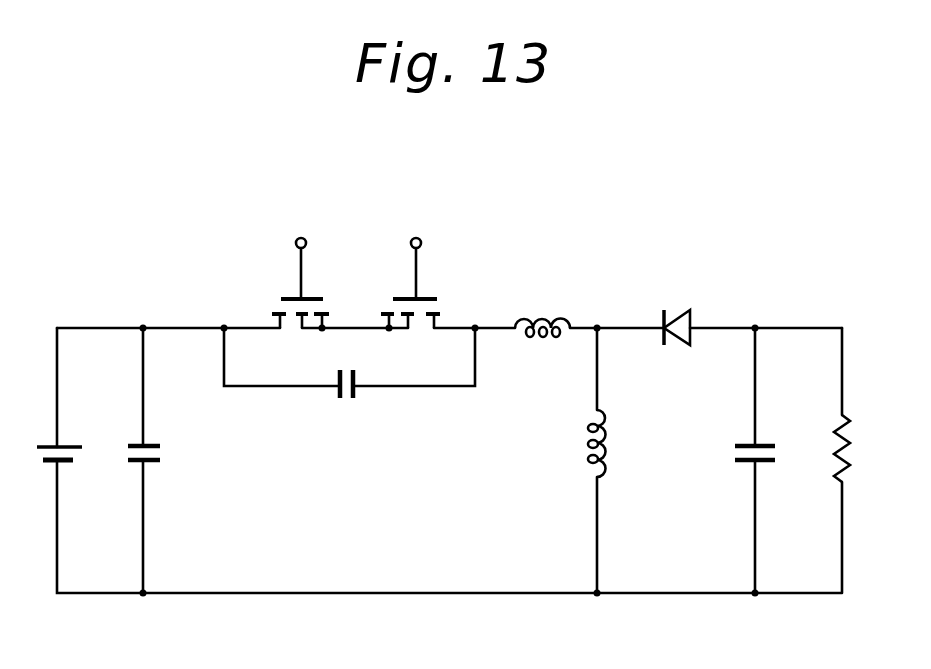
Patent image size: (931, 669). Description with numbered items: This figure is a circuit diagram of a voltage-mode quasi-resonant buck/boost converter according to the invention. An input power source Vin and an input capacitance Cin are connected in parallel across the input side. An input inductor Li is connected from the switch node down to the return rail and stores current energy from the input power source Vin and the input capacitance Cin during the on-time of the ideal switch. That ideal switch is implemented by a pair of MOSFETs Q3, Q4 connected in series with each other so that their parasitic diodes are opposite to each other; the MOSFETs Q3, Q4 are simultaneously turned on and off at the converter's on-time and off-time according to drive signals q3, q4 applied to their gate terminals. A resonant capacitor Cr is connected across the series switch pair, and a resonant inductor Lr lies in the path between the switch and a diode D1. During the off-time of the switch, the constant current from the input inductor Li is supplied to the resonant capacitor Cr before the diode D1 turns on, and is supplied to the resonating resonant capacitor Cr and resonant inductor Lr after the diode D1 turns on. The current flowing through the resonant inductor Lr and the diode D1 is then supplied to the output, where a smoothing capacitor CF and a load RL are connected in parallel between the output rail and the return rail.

The input power source Vin is at (76, 455).
The input capacitance Cin is at (164, 455).
The drive signal q3 is at (298, 255).
The MOSFET Q3 is at (324, 298).
The drive signal q4 is at (413, 255).
The MOSFET Q4 is at (437, 298).
The resonant capacitor Cr is at (347, 400).
The resonant inductor Lr is at (540, 318).
The diode D1 is at (688, 310).
The input inductor Li is at (606, 450).
The smoothing capacitor CF is at (778, 452).
The load RL is at (847, 457).